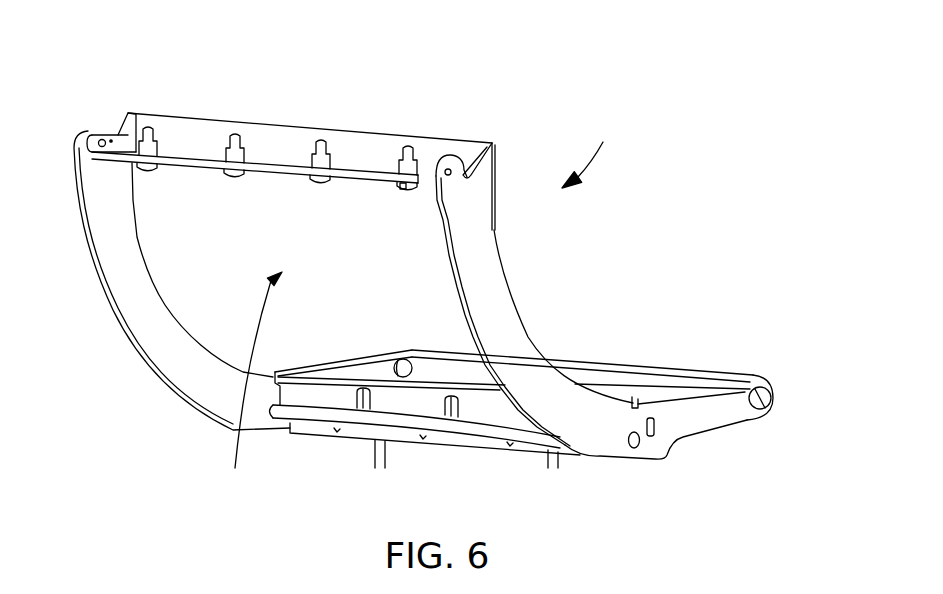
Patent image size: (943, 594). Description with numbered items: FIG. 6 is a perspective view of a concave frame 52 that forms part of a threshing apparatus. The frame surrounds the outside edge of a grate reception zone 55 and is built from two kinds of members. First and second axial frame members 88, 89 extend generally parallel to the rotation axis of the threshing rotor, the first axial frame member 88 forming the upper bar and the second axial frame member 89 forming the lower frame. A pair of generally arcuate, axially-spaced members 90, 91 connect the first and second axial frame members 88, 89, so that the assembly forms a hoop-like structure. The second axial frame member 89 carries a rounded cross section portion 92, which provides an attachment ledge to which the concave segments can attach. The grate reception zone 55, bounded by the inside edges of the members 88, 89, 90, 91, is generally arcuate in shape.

The bale carrier frame assembly 52 is at (591, 149).
The grate reception zone 55 is at (250, 384).
The first axial frame member 88 is at (387, 134).
The second axial frame member 89 is at (490, 447).
The arcuate member 90 is at (502, 297).
The arcuate member 91 is at (125, 310).
The rounded cross section portion 92 is at (332, 420).